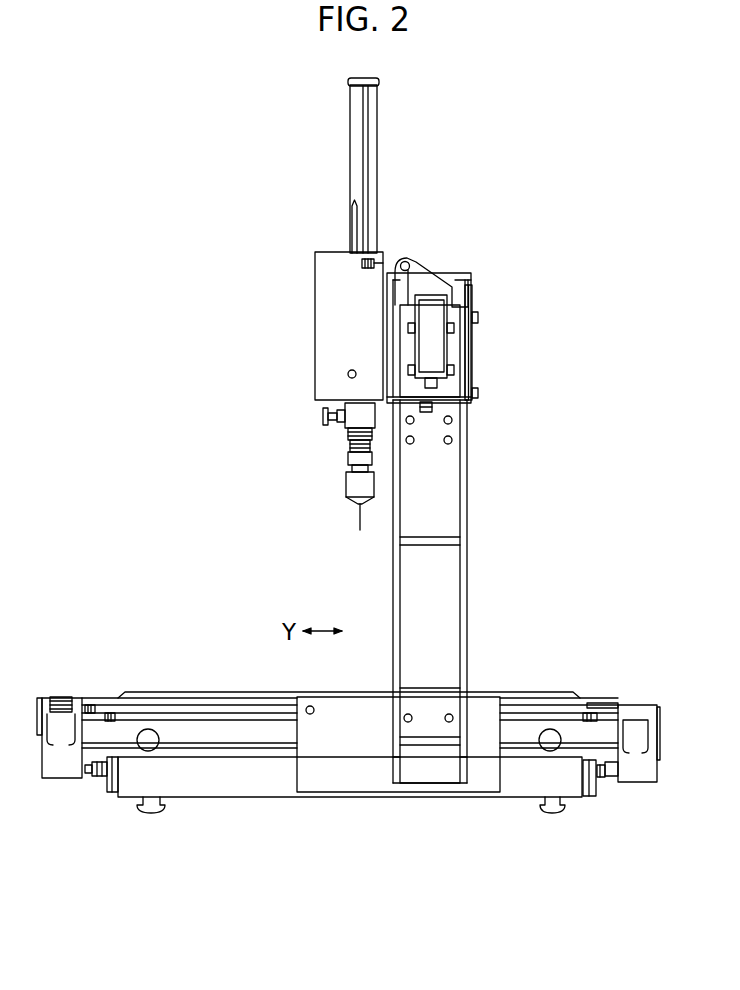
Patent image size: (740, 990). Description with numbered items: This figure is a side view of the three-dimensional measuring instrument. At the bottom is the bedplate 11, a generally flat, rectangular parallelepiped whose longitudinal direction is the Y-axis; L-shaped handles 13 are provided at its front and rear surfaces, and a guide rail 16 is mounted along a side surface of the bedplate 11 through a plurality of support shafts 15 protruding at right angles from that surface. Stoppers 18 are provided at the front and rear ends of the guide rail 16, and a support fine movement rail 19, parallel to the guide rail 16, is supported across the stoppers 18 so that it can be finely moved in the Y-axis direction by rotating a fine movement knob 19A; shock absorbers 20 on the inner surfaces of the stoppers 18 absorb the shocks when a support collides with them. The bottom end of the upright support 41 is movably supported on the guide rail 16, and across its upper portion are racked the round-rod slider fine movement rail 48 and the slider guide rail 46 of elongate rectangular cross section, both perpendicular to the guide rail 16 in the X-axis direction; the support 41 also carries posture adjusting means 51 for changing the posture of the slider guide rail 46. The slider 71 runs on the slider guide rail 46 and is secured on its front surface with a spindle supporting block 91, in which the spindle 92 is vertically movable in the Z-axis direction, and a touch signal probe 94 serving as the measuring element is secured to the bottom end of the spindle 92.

The bedplate 11 is at (217, 692).
The handles 13 is at (112, 793).
The support shafts 15 is at (153, 746).
The guide rail 16 is at (262, 762).
The stoppers 18 is at (53, 775).
The support fine movement rail 19 is at (146, 706).
The fine movement knob 19A is at (61, 697).
The shock absorbers 20 is at (88, 778).
The support 41 is at (450, 572).
The slider guide rail 46 is at (440, 350).
The slider fine movement rail 48 is at (403, 258).
The posture adjusting means 51 is at (489, 332).
The slider 71 is at (465, 288).
The spindle supporting block 91 is at (327, 325).
The spindle 92 is at (377, 160).
The touch signal probe 94 is at (350, 485).